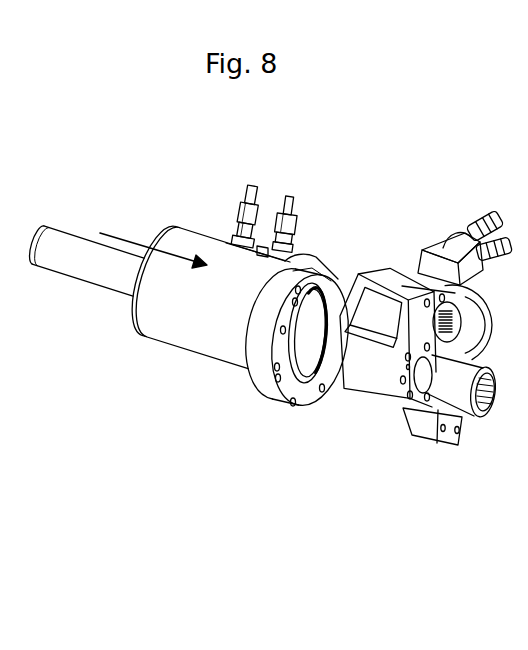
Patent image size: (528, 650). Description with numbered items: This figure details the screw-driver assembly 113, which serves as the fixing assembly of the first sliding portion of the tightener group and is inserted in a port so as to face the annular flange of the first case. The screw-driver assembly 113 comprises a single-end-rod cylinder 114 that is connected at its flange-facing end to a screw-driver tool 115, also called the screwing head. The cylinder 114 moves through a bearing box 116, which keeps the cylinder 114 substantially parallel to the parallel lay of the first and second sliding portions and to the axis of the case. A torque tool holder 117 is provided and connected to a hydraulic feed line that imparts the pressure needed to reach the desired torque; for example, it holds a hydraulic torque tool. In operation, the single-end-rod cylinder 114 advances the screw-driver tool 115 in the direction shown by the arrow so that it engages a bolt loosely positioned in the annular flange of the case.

The screw-driver assembly 113 is at (359, 212).
The single-end-rod cylinder 114 is at (82, 250).
The screw-driver tool 115 is at (438, 395).
The bearing box 116 is at (185, 323).
The torque tool holder 117 is at (405, 282).